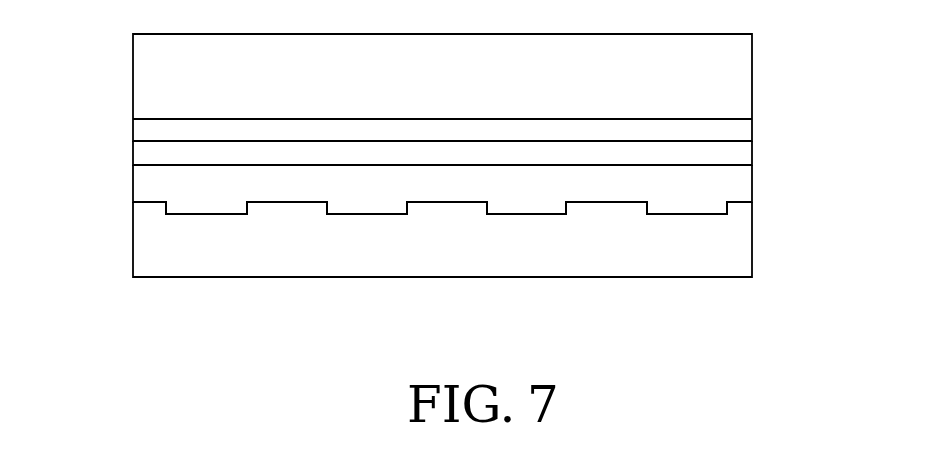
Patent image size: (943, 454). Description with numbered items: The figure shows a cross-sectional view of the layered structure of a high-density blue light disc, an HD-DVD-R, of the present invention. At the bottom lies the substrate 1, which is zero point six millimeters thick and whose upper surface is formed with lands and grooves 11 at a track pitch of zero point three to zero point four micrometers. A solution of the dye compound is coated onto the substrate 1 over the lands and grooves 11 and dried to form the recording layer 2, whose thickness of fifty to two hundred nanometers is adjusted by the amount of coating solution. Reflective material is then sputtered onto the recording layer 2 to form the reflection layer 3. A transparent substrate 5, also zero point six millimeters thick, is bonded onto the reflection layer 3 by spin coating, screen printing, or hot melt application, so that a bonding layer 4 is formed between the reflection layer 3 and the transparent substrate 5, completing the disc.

The substrate 1 is at (737, 246).
The recording layer 2 is at (735, 184).
The reflection layer 3 is at (740, 152).
The bonding layer 4 is at (740, 129).
The transparent substrate 5 is at (735, 74).
The lands and grooves 11 is at (215, 205).